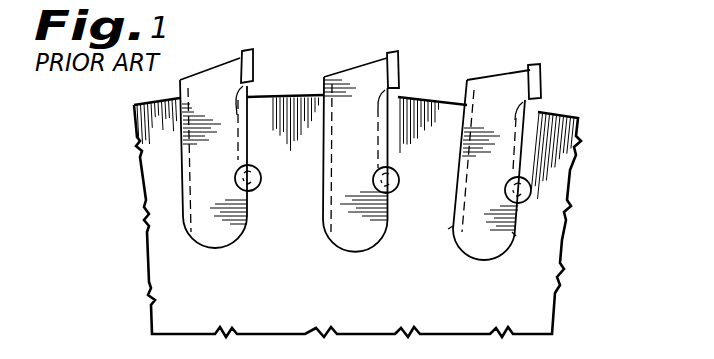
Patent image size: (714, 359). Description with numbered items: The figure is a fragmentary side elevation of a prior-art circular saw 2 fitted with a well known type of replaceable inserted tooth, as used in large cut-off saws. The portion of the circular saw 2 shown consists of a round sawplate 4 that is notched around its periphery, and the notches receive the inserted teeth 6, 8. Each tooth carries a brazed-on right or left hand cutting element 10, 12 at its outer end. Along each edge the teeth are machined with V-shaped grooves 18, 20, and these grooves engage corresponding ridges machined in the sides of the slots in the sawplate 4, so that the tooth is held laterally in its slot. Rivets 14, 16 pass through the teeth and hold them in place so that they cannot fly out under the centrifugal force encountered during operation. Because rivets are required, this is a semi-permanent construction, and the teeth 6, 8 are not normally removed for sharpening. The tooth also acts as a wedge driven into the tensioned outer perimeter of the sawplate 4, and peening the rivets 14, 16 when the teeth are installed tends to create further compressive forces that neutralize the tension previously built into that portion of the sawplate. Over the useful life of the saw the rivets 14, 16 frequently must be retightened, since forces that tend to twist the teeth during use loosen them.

The circular saw 2 is at (357, 25).
The round sawplate 4 is at (482, 313).
The inserted tooth 6 is at (488, 73).
The inserted tooth 8 is at (356, 71).
The cutting element 10 is at (536, 64).
The cutting element 12 is at (397, 52).
The rivet 14 is at (527, 203).
The rivet 16 is at (399, 189).
The V-shaped groove 18 is at (510, 234).
The V-shaped groove 20 is at (447, 230).